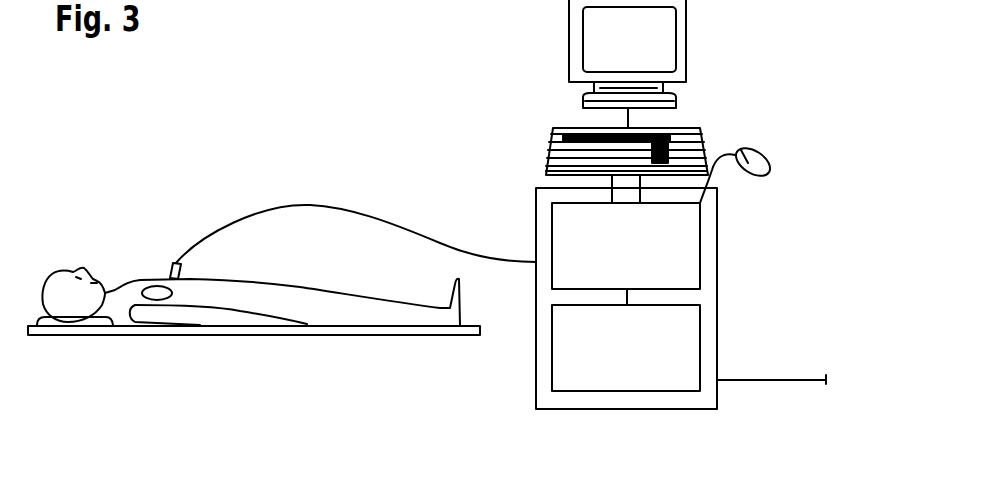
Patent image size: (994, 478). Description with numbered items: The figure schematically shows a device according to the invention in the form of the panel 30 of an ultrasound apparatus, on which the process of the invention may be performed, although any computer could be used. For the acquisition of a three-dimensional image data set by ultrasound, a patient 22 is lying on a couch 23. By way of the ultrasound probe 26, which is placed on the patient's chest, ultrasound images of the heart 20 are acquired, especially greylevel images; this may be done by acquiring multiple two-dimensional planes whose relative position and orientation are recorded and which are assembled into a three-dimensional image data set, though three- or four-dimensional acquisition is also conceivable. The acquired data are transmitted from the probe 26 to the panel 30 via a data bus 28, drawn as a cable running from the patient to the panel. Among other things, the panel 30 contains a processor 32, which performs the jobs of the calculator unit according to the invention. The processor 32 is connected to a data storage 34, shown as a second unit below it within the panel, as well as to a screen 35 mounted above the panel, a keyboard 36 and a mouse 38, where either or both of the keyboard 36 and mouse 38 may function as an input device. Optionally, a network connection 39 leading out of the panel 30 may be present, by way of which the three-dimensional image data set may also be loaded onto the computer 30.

The heart 20 is at (147, 282).
The patient 22 is at (280, 283).
The couch 23 is at (290, 336).
The ultra sound probe 26 is at (172, 260).
The data bus 28 is at (388, 215).
The panel 30 is at (760, 230).
The processor 32 is at (700, 266).
The data storage 34 is at (700, 326).
The screen 35 is at (592, 47).
The keyboard 36 is at (692, 128).
The mouse 38 is at (763, 150).
The network connection 39 is at (773, 380).